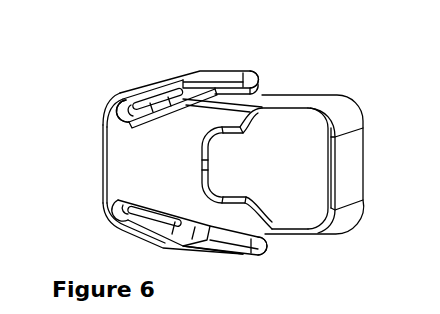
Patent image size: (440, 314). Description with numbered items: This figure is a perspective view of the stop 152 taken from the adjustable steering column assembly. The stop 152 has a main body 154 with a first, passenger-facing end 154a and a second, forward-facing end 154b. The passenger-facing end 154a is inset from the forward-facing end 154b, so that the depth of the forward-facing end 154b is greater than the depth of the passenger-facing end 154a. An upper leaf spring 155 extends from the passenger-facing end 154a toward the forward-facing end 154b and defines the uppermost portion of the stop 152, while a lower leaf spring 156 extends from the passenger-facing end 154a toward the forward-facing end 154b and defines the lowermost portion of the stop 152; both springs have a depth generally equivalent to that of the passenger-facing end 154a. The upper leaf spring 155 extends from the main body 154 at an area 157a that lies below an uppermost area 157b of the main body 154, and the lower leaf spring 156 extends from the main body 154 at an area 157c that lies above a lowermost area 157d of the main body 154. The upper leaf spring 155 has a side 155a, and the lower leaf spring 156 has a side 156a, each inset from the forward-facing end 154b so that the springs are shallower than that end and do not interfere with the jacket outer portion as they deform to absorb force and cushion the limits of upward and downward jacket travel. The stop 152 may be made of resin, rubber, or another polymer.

The stop 152 is at (374, 55).
The main body 154 is at (364, 243).
The passenger-facing end 154a is at (95, 145).
The forward-facing end 154b is at (375, 165).
The upper leaf spring 155 is at (219, 73).
The side of upper leaf spring 155a is at (242, 70).
The lower leaf spring 156 is at (217, 253).
The side of lower leaf spring 156a is at (257, 253).
The area where upper leaf spring extends from main body 157a is at (112, 123).
The uppermost area of main body 157b is at (277, 93).
The area where lower leaf spring extends from main body 157c is at (118, 200).
The lowermost area of main body 157d is at (280, 238).